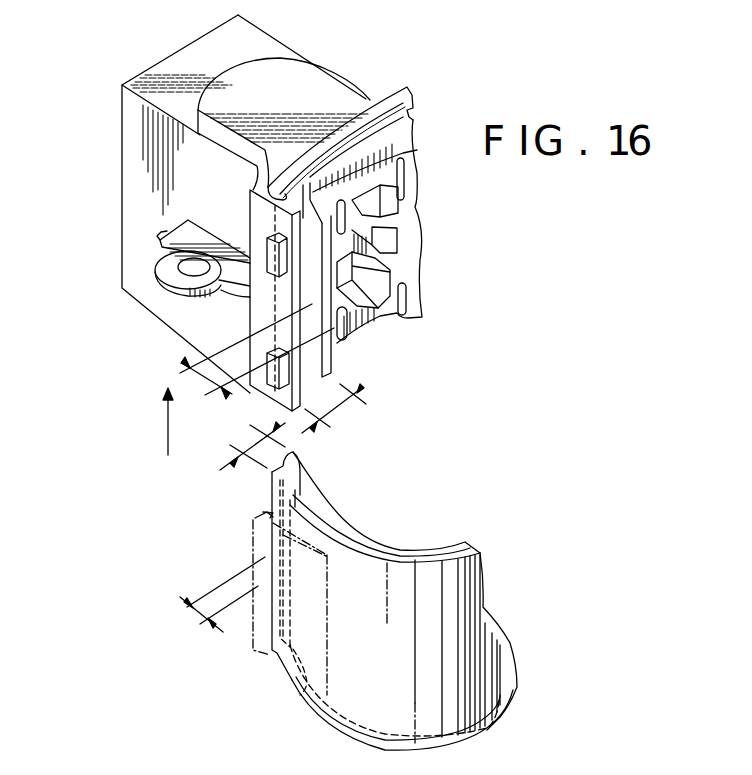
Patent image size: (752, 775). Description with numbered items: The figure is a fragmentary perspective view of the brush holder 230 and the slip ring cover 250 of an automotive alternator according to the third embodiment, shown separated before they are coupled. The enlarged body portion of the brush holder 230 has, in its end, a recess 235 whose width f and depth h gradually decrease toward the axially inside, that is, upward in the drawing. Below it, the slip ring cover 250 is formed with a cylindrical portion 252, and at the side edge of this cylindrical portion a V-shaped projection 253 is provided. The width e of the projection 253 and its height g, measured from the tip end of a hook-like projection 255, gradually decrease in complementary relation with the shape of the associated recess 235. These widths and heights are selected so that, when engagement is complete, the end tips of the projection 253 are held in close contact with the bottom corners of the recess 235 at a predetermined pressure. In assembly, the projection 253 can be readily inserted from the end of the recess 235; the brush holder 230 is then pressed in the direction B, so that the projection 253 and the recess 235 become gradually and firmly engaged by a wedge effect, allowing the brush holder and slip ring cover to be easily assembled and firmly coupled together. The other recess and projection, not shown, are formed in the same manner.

The brush holder 230 is at (121, 198).
The recess 235 is at (327, 345).
The slip ring cover 250 is at (488, 608).
The cylindrical portion 252 is at (485, 733).
The V-shaped projection 253 is at (307, 470).
The hook-like projection 255 is at (327, 622).
The depth of recess h is at (249, 351).
The width of projection e is at (252, 442).
The width of recess f is at (334, 411).
The height of projection g is at (222, 603).
The pressing direction B is at (155, 421).